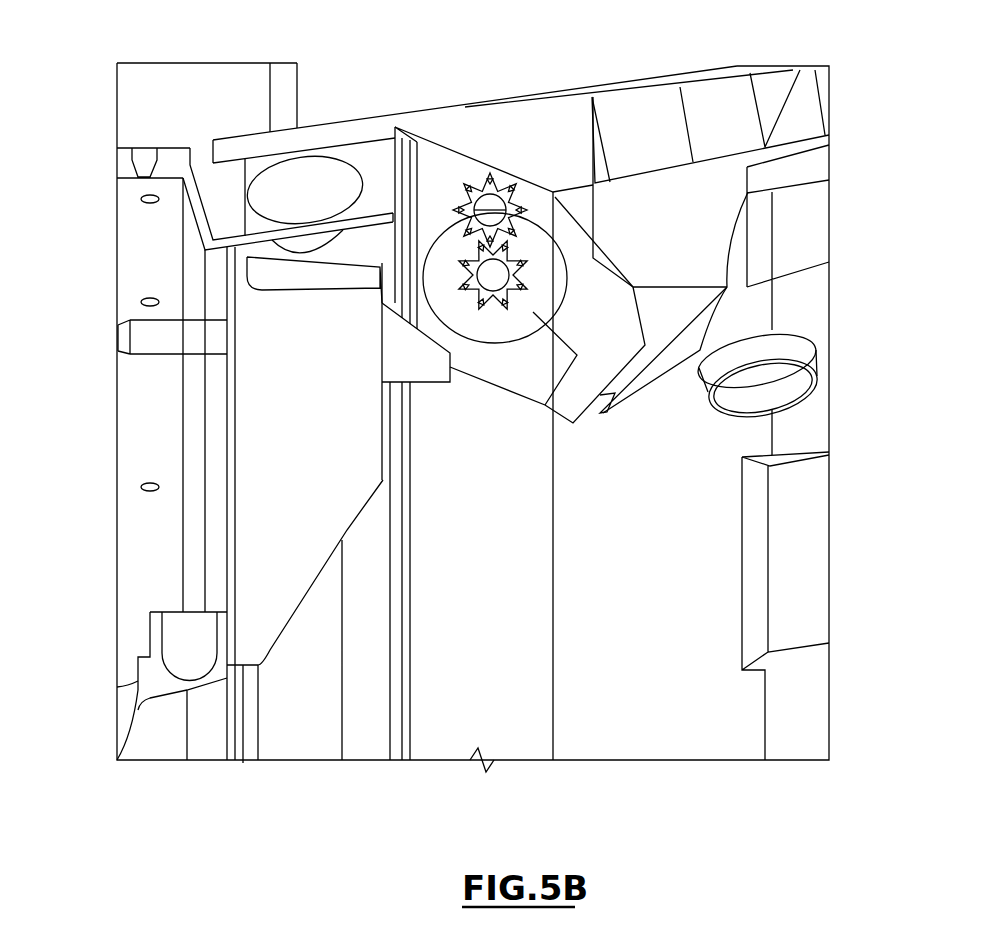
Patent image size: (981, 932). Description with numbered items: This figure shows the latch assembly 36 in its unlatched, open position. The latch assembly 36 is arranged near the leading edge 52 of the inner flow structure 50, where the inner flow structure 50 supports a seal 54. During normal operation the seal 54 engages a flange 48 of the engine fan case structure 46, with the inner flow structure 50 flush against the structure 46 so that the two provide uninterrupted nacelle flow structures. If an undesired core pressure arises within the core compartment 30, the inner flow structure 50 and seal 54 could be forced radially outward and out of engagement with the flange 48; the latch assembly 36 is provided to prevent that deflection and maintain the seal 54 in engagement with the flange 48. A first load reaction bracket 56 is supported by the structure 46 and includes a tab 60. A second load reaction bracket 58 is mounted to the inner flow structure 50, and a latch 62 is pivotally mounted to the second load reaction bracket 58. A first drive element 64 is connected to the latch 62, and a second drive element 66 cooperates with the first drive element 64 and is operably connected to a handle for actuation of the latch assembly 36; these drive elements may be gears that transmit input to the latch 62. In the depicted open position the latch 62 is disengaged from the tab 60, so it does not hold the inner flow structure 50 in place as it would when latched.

The core compartment 30 is at (654, 568).
The latch assembly 36 is at (477, 528).
The engine fan case structure 46 is at (130, 176).
The flange 48 is at (377, 143).
The inner flow structure 50 is at (468, 100).
The leading edge 52 is at (213, 152).
The seal 54 is at (338, 178).
The first load reaction bracket 56 is at (340, 487).
The second load reaction bracket 58 is at (703, 232).
The tab 60 is at (423, 363).
The latch 62 is at (598, 318).
The first drive element 64 is at (488, 300).
The second drive element 66 is at (505, 178).